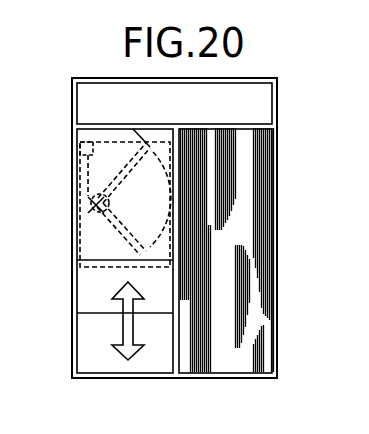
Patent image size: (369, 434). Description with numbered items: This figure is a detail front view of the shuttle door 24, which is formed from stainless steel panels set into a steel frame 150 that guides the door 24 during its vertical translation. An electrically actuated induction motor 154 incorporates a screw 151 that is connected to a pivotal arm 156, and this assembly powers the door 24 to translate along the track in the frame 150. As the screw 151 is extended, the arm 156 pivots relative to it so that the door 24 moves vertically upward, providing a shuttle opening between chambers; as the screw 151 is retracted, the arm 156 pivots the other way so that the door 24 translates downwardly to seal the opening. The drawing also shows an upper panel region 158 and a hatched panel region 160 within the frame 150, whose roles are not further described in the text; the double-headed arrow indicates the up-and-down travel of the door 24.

The steel frame 150 is at (88, 347).
The screw 151 is at (160, 366).
The induction motor 154 is at (78, 152).
The pivotal arm 156 is at (82, 226).
The upper panel 158 is at (262, 104).
The hatched panel 160 is at (268, 167).
The shuttle door 24 is at (97, 288).